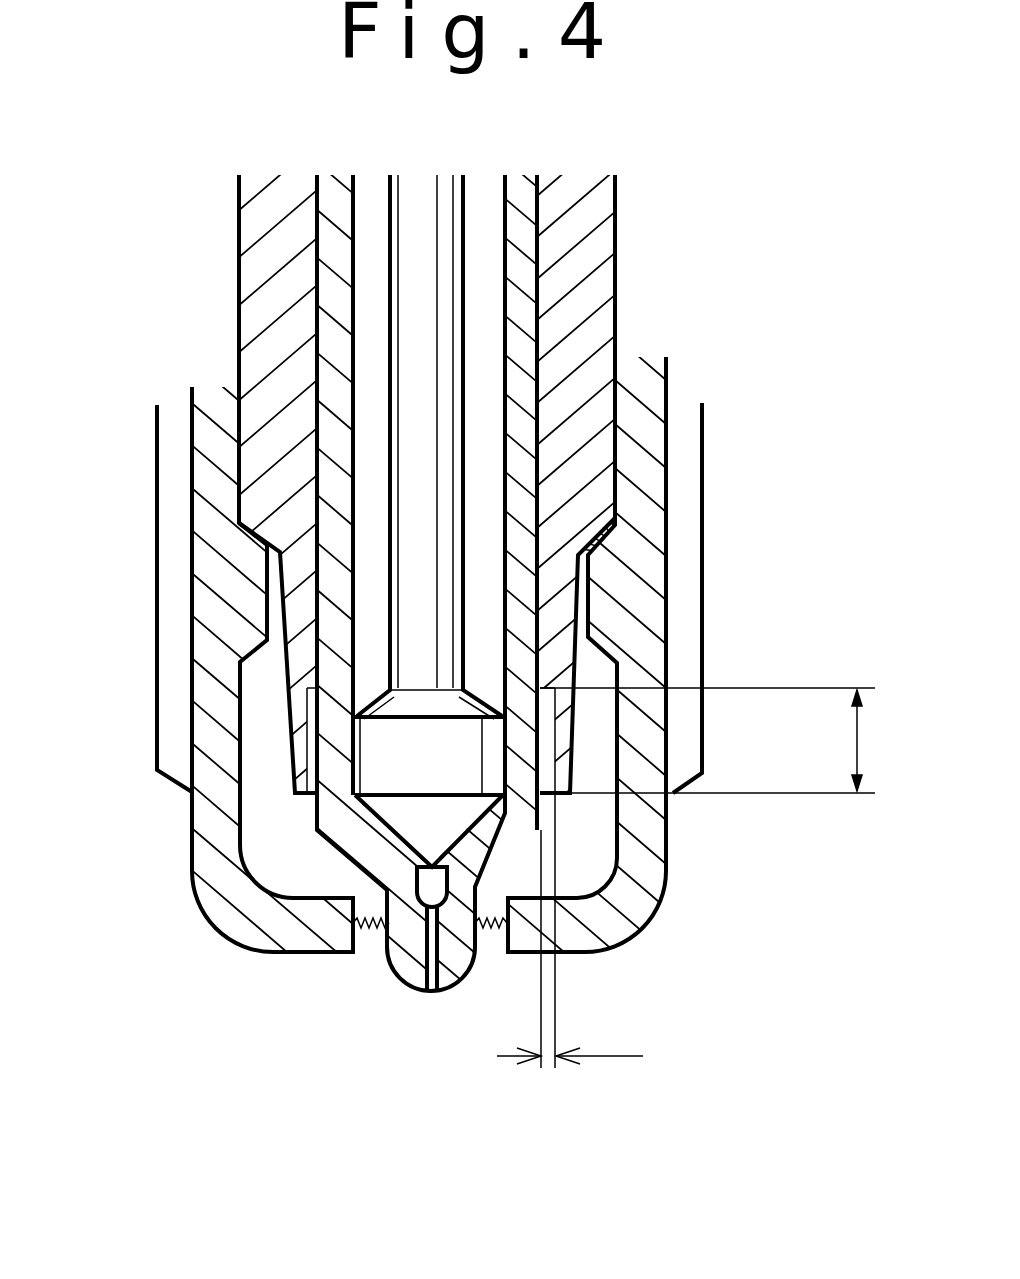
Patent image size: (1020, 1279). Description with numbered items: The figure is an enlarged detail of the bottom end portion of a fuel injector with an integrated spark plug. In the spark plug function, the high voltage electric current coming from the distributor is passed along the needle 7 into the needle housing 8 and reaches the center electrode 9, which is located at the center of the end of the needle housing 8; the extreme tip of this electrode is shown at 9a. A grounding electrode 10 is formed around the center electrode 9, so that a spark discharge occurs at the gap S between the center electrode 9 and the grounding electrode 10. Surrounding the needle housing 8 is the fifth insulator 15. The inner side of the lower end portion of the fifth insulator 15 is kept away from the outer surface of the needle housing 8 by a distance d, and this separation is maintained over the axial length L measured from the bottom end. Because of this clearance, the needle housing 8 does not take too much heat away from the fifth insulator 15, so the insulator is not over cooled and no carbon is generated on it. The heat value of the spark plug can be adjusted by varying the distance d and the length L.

The needle 7 is at (367, 767).
The needle housing 8 is at (372, 842).
The center electrode 9 is at (458, 987).
The tip end 9a is at (440, 988).
The grounding electrode 10 is at (617, 925).
The fifth insulator 15 is at (300, 643).
The gap S is at (370, 928).
The axial length L is at (719, 740).
The distance d is at (570, 1035).